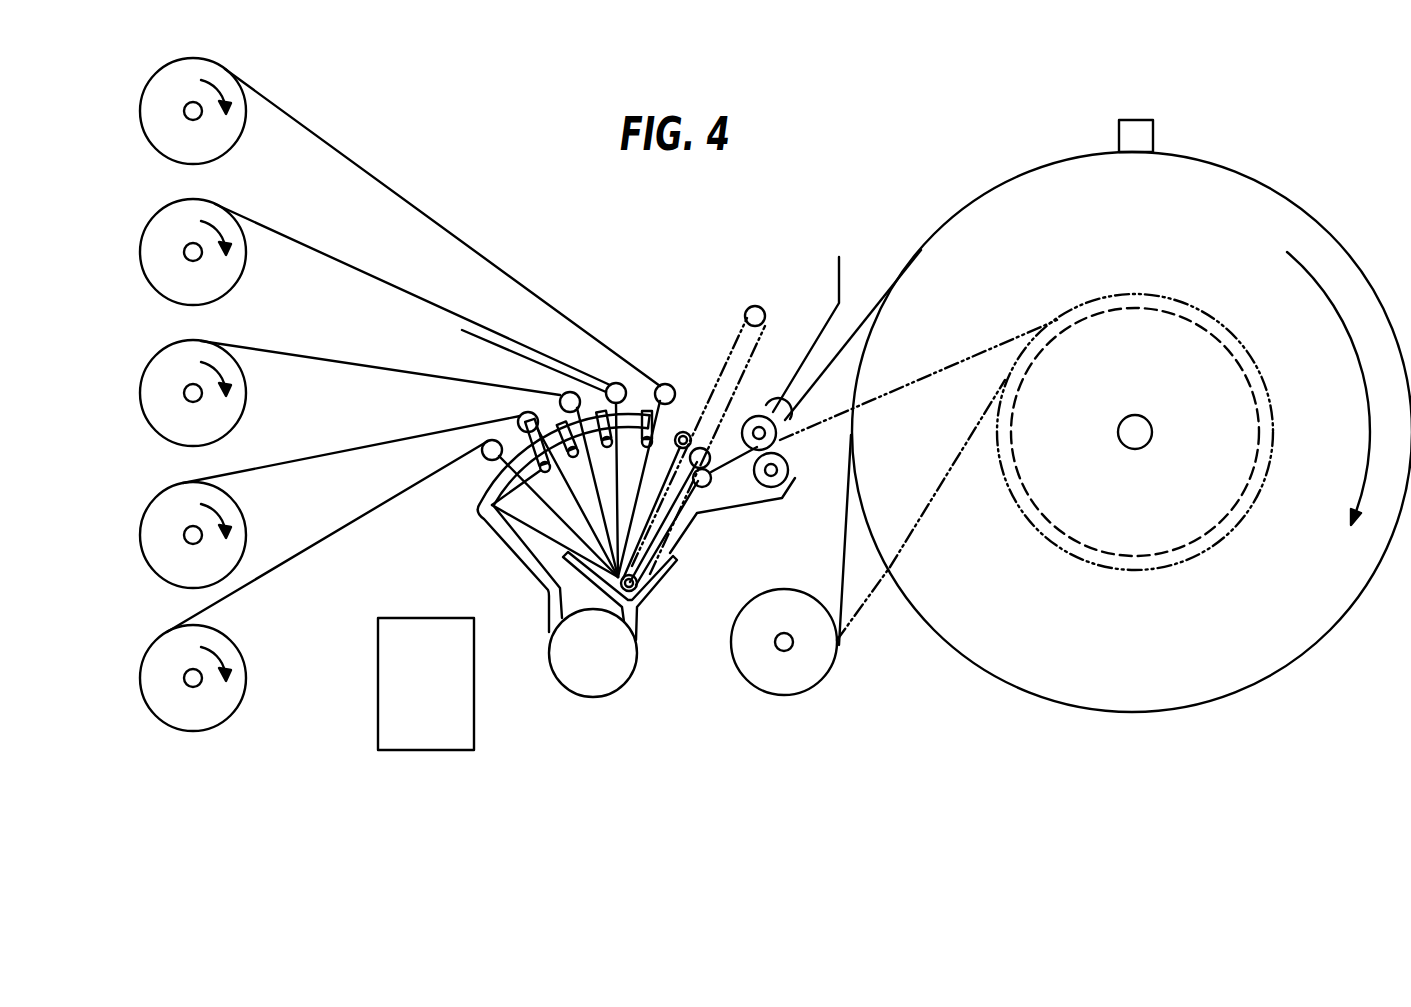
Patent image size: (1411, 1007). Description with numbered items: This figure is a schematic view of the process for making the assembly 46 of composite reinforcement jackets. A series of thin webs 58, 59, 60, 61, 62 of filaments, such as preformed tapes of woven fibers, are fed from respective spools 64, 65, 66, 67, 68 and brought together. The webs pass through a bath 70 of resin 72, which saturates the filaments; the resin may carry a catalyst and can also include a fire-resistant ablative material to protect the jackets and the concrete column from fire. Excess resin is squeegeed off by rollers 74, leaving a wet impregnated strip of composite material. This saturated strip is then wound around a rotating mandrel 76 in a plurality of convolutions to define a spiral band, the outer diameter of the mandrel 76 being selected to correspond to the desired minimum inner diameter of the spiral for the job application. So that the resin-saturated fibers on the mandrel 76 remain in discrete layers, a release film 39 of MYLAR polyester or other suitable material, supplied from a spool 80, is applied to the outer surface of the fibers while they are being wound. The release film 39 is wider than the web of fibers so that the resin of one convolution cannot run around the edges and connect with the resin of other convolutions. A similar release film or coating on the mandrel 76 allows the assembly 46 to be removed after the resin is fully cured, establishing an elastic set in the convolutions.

The release film 39 is at (868, 608).
The assembly 46 is at (1220, 553).
The web 58 is at (295, 114).
The web 59 is at (293, 238).
The web 60 is at (295, 354).
The web 61 is at (296, 459).
The web 62 is at (291, 561).
The spool 64 is at (160, 73).
The spool 65 is at (160, 215).
The spool 66 is at (160, 357).
The spool 67 is at (160, 499).
The spool 68 is at (160, 643).
The bath 70 is at (629, 653).
The resin 72 is at (679, 543).
The rollers 74 is at (789, 462).
The mandrel 76 is at (1162, 567).
The spool 80 is at (741, 673).